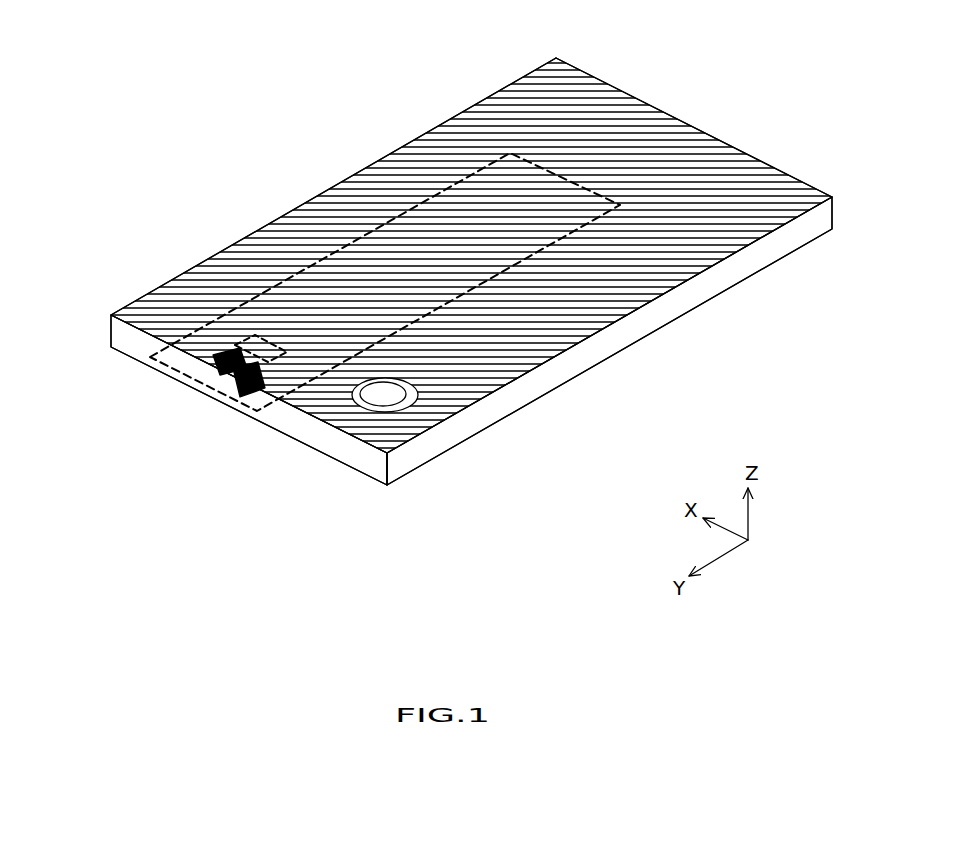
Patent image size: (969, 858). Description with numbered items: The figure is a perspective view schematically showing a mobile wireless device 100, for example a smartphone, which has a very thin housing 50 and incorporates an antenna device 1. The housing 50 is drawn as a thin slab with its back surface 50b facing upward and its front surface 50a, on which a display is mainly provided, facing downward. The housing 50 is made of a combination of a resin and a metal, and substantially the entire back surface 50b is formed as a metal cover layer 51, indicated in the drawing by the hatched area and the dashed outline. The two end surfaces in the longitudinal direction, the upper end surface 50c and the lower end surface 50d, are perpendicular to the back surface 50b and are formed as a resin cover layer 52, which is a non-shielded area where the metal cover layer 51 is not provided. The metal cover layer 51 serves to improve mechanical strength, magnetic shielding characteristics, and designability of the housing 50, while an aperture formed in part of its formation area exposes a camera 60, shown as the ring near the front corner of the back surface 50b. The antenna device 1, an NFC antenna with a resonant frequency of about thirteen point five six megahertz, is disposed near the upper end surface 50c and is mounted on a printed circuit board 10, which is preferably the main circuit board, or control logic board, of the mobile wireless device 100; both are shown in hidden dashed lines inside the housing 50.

The mobile wireless device 100 is at (272, 66).
The antenna device 1 is at (222, 406).
The printed circuit board 10 is at (188, 382).
The housing 50 is at (643, 323).
The front surface 50a is at (523, 398).
The back surface 50b is at (418, 172).
The upper end surface 50c is at (337, 446).
The lower end surface 50d is at (722, 135).
The metal cover layer 51 is at (298, 225).
The resin cover layer 52 is at (590, 83).
The camera 60 is at (400, 397).